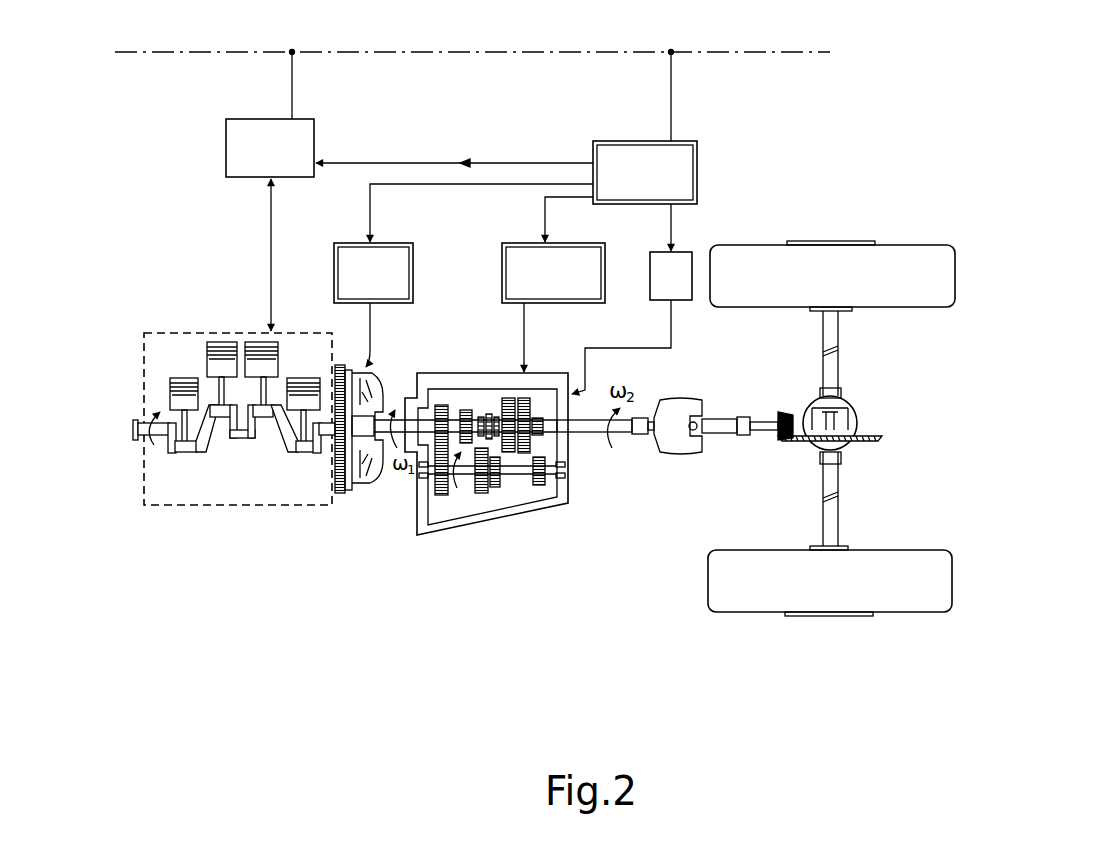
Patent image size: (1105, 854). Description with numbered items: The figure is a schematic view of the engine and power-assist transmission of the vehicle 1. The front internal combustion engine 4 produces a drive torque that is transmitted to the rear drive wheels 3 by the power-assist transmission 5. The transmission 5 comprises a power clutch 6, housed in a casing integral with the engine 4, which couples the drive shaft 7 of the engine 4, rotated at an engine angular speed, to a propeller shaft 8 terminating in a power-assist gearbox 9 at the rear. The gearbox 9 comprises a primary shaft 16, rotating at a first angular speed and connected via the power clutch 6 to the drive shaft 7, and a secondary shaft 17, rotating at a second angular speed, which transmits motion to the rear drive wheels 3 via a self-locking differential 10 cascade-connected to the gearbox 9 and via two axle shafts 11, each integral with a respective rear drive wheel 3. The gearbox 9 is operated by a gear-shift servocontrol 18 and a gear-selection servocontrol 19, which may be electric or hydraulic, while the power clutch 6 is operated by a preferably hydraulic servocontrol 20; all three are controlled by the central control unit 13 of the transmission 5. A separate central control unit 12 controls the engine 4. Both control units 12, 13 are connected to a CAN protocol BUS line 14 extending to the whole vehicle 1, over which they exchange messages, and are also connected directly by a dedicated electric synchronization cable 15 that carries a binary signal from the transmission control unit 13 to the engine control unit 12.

The vehicle 1 is at (1008, 130).
The rear drive wheels 3 is at (895, 255).
The internal combustion engine 4 is at (234, 400).
The power-assist transmission 5 is at (499, 529).
The power clutch 6 is at (366, 488).
The drive shaft 7 is at (280, 433).
The propeller shaft 8 is at (402, 398).
The power-assist gearbox 9 is at (446, 549).
The self-locking differential 10 is at (872, 442).
The axle shafts 11 is at (840, 378).
The central control unit 12 is at (303, 128).
The central control unit 13 is at (616, 153).
The BUS line 14 is at (571, 50).
The electric synchronization cable 15 is at (486, 162).
The primary shaft 16 is at (548, 476).
The secondary shaft 17 is at (545, 428).
The gear-shift servocontrol 18 is at (597, 262).
The gear-selection servocontrol 19 is at (690, 264).
The servocontrol 20 is at (402, 262).